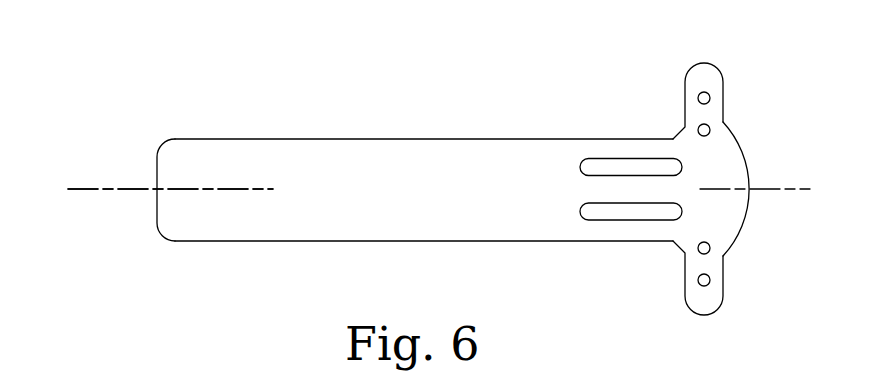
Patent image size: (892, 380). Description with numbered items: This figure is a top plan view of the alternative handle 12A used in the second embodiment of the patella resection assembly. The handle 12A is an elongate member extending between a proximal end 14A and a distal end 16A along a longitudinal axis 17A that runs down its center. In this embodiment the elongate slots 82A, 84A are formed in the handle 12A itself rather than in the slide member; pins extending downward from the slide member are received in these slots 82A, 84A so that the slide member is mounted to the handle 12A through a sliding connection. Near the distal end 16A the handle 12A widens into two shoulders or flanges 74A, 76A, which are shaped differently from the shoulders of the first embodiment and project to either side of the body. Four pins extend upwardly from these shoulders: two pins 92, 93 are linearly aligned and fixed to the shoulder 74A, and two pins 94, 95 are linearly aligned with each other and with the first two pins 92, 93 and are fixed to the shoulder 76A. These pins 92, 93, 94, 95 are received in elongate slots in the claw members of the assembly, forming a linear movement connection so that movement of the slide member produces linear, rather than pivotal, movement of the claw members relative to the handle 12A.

The handle 12A is at (382, 151).
The proximal end 14A is at (156, 173).
The distal end 16A is at (746, 168).
The longitudinal plane 17A is at (200, 188).
The shoulder 74A is at (697, 98).
The shoulder 76A is at (697, 280).
The elongate slot 82A is at (580, 167).
The elongate slot 84A is at (580, 211).
The pin 92 is at (710, 98).
The pin 93 is at (710, 130).
The pin 94 is at (710, 248).
The pin 95 is at (710, 280).